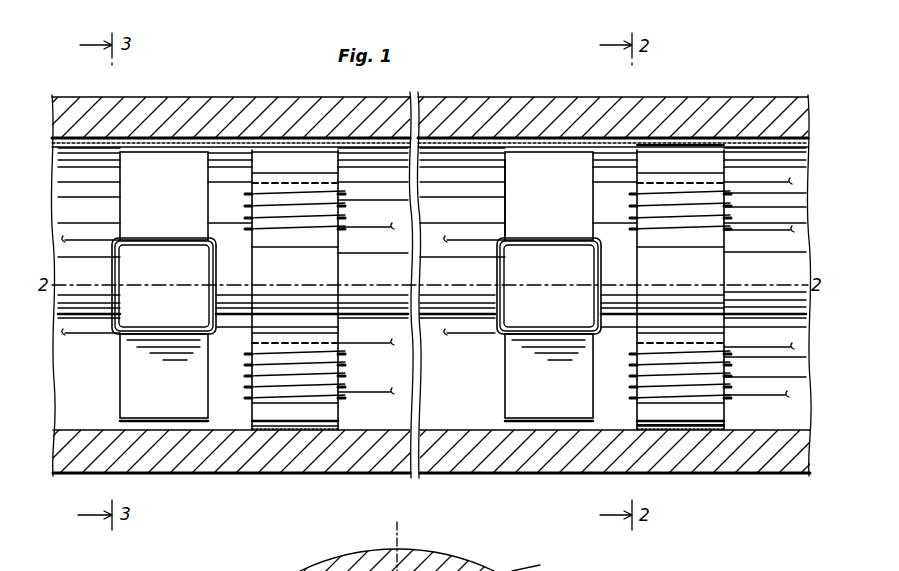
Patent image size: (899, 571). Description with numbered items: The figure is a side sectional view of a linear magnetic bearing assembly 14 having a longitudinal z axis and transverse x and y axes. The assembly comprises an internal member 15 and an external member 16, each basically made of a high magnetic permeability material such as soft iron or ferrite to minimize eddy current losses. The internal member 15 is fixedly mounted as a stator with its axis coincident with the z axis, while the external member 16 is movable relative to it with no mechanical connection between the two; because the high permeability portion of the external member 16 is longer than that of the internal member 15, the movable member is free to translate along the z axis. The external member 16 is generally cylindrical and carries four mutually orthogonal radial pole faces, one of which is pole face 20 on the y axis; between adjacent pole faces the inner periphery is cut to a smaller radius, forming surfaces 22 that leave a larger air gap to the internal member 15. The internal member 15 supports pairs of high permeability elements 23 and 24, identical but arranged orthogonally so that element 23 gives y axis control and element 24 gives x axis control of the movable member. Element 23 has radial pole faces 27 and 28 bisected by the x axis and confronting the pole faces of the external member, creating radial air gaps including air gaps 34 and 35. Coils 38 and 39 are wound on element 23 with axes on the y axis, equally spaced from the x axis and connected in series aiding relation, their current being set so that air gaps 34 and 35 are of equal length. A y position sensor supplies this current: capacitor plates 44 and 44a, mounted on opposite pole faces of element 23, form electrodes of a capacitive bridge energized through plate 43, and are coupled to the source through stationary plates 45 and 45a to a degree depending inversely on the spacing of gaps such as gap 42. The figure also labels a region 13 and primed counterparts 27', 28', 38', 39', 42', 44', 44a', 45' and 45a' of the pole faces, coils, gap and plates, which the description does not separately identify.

The first wall panel 13 is at (88, 216).
The linear magnetic bearing assembly 14 is at (468, 218).
The internal member 15 is at (460, 312).
The external member 16 is at (427, 100).
The pole face 20 is at (388, 553).
The surfaces 22 is at (438, 405).
The element 23 is at (648, 160).
The element 24 is at (507, 185).
The pole face 27 is at (549, 150).
The block 27' is at (164, 150).
The pole face 28 is at (611, 333).
The channel member 28' is at (159, 413).
The air gap 34 is at (555, 423).
The air gap 35 is at (662, 143).
The coil 38 is at (630, 432).
The spring 38' is at (247, 333).
The coil 39 is at (640, 200).
The spring 39' is at (279, 145).
The gap 42 is at (532, 318).
The tube 42' is at (139, 321).
The plate 43 is at (520, 570).
The capacitor plate 44 is at (549, 305).
The flange 44' is at (231, 81).
The capacitor plate 44a is at (723, 476).
The lower flange 44a' is at (260, 473).
The stationary plate 45 is at (610, 293).
The web 45' is at (231, 101).
The stationary plate 45a is at (695, 498).
The lower web 45a' is at (284, 483).